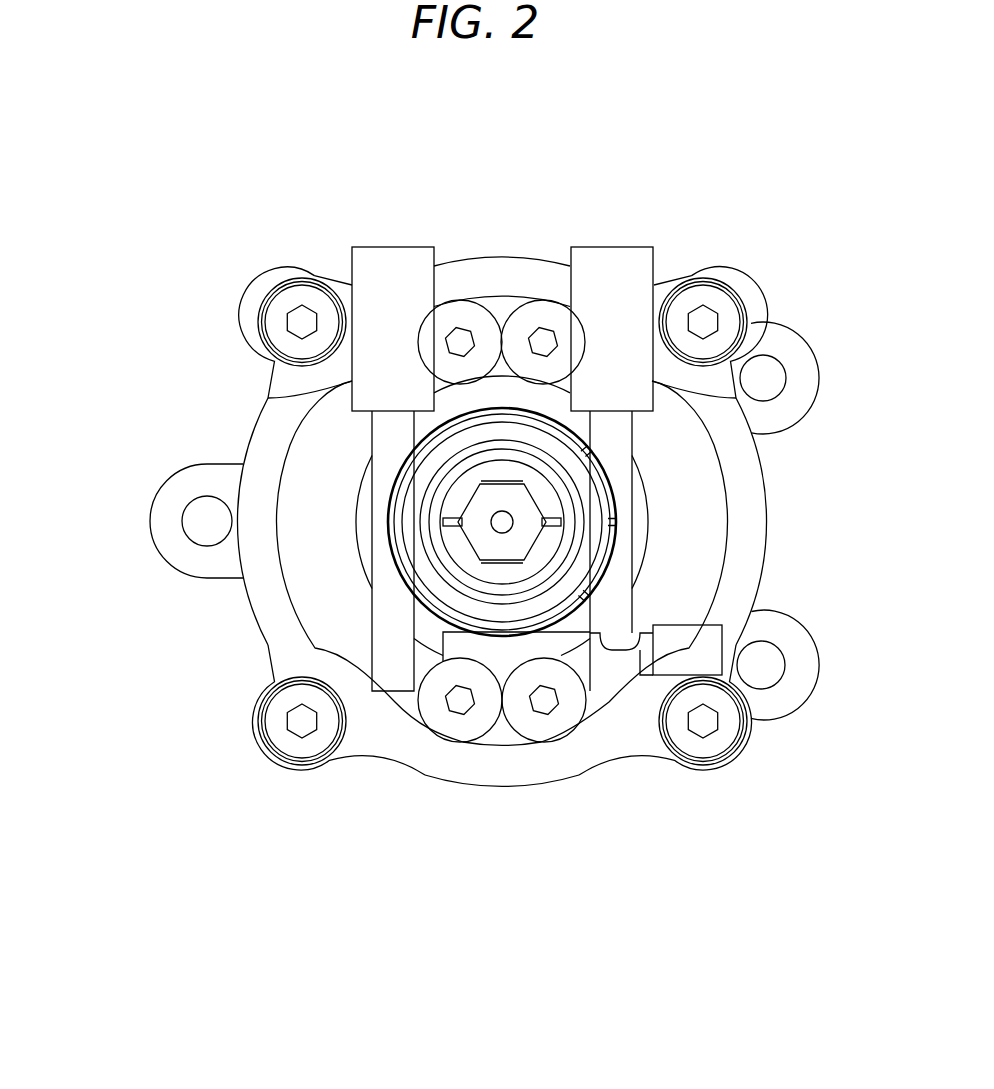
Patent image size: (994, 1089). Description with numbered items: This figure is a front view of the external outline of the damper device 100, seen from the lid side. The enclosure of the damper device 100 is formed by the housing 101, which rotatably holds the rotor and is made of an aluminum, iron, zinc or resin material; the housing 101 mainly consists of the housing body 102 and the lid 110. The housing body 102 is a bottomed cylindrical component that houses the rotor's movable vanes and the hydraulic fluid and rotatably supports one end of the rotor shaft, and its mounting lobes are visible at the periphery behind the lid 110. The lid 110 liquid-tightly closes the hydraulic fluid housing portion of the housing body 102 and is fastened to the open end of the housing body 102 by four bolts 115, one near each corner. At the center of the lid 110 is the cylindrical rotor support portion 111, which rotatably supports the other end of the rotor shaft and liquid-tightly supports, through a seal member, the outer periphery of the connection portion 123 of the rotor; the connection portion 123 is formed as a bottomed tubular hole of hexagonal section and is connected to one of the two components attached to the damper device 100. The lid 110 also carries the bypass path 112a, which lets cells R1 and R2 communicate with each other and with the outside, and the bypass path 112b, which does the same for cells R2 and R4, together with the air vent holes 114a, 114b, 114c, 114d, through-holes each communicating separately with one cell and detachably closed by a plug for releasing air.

The damper device 100 is at (218, 112).
The housing 101 is at (716, 168).
The lid 110 is at (730, 277).
The housing body 102 is at (793, 320).
The rotor support portion 111 is at (423, 433).
The bypass path 112a is at (372, 630).
The bypass path 112b is at (592, 607).
The air vent hole 114a is at (548, 317).
The air vent hole 114b is at (563, 728).
The air vent hole 114c is at (450, 728).
The air vent hole 114d is at (455, 317).
The bolt 115 is at (302, 292).
The connection portion 123 is at (523, 548).